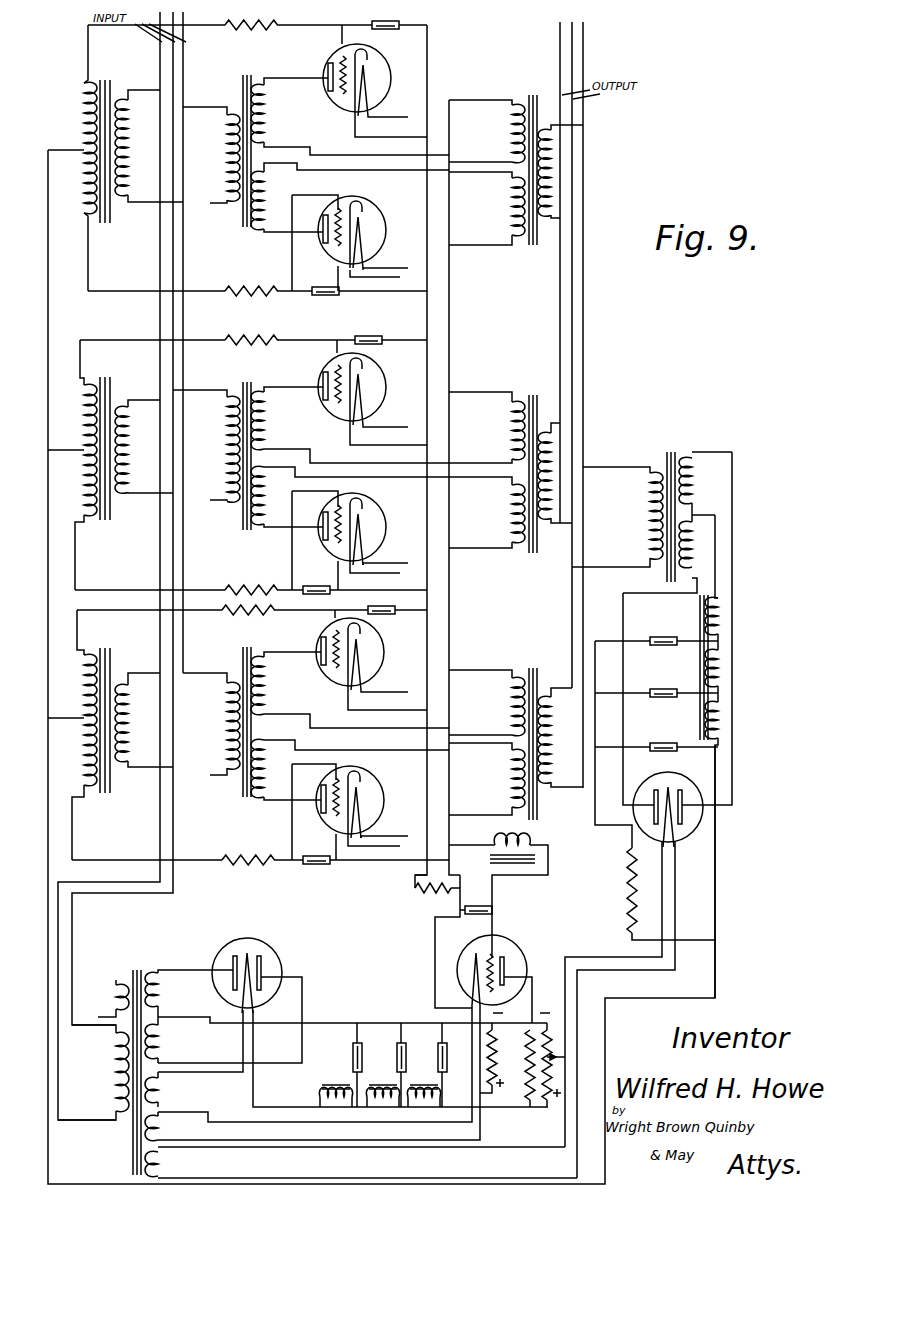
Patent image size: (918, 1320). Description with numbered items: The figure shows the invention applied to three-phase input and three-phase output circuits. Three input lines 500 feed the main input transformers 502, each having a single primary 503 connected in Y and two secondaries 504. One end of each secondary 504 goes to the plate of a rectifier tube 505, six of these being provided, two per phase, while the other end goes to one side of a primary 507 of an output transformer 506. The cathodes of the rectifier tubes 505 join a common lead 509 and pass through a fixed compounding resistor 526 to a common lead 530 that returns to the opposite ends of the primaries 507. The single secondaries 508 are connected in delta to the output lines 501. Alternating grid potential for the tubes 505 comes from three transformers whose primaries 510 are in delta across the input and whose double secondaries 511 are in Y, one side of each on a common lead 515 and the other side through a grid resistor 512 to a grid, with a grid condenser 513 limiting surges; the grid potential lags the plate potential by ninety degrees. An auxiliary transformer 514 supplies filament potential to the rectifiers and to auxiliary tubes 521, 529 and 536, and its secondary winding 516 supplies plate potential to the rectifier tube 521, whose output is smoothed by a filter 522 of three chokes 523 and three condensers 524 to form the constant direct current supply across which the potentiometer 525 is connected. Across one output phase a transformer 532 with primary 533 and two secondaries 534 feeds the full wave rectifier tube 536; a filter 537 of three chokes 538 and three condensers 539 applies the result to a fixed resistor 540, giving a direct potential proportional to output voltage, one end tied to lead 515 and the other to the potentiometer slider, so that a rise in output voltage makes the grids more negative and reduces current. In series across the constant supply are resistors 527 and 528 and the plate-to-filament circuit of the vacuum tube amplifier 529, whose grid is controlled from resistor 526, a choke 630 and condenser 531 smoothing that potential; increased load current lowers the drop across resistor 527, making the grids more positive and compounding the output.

The input lines 500 is at (178, 32).
The output lines 501 is at (586, 26).
The main input transformer 502 is at (243, 84).
The primary 503 is at (227, 157).
The secondary 504 is at (266, 110).
The rectifier tube 505 is at (378, 82).
The output transformer 506 is at (533, 92).
The primary 507 is at (512, 127).
The secondary 508 is at (552, 167).
The common cathode lead 509 is at (108, 82).
The primary 510 is at (126, 152).
The secondary 511 is at (84, 106).
The grid resistor 512 is at (282, 30).
The grid condenser 513 is at (400, 25).
The auxiliary transformer 514 is at (136, 972).
The common lead 515 is at (50, 336).
The secondary winding 516 is at (160, 1000).
The rectifier tube 521 is at (282, 967).
The filter 522 is at (357, 1040).
The choke 523 is at (322, 1092).
The condenser 524 is at (440, 1040).
The potentiometer 525 is at (552, 1037).
The compounding resistor 526 is at (428, 892).
The resistor 527 is at (494, 1067).
The resistor 528 is at (530, 1102).
The vacuum tube amplifier 529 is at (516, 958).
The common lead 530 is at (450, 640).
The condenser 531 is at (486, 910).
The transformer 532 is at (672, 450).
The primary 533 is at (650, 492).
The secondary 534 is at (692, 482).
The full wave rectifier tube 536 is at (700, 794).
The filter 537 is at (705, 670).
The choke 538 is at (718, 610).
The condenser 539 is at (655, 638).
The fixed resistor 540 is at (630, 882).
The choke coil 630 is at (530, 843).